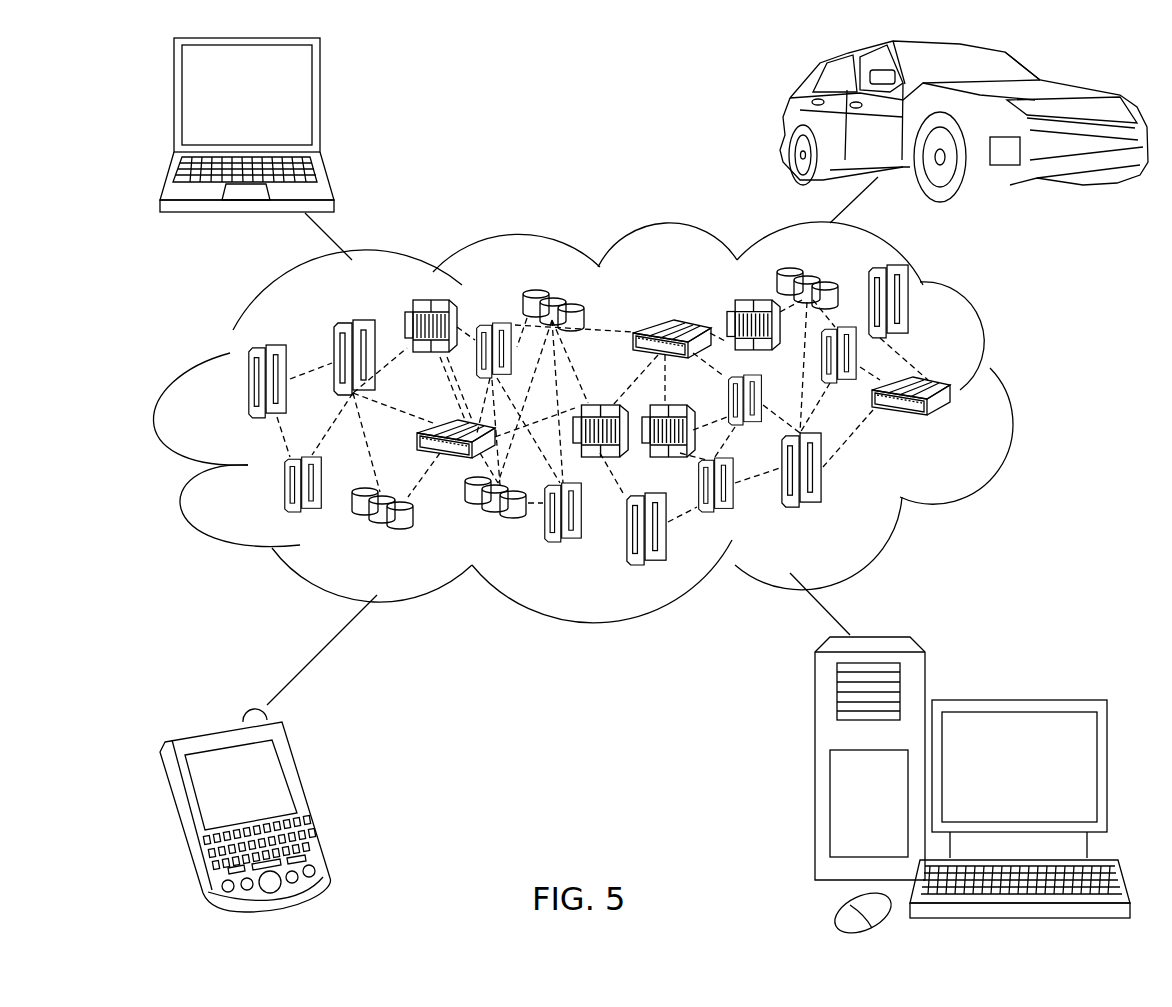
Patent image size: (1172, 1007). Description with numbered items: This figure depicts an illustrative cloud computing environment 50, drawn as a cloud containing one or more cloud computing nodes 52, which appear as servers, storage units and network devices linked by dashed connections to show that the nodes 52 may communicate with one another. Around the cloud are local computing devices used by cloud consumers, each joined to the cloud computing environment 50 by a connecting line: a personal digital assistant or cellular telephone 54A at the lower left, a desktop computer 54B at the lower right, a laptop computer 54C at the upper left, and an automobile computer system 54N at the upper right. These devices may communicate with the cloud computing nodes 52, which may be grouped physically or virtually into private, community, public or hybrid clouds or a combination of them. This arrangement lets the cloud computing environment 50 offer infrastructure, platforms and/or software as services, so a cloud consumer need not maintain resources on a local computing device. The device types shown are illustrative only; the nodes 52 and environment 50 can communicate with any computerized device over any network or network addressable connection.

The cloud computing environment 50 is at (1012, 392).
The cloud computing nodes 52 is at (953, 427).
The personal digital assistant or cellular telephone 54A is at (310, 798).
The desktop computer 54B is at (1017, 700).
The laptop computer 54C is at (320, 102).
The automobile computer system 54N is at (785, 118).